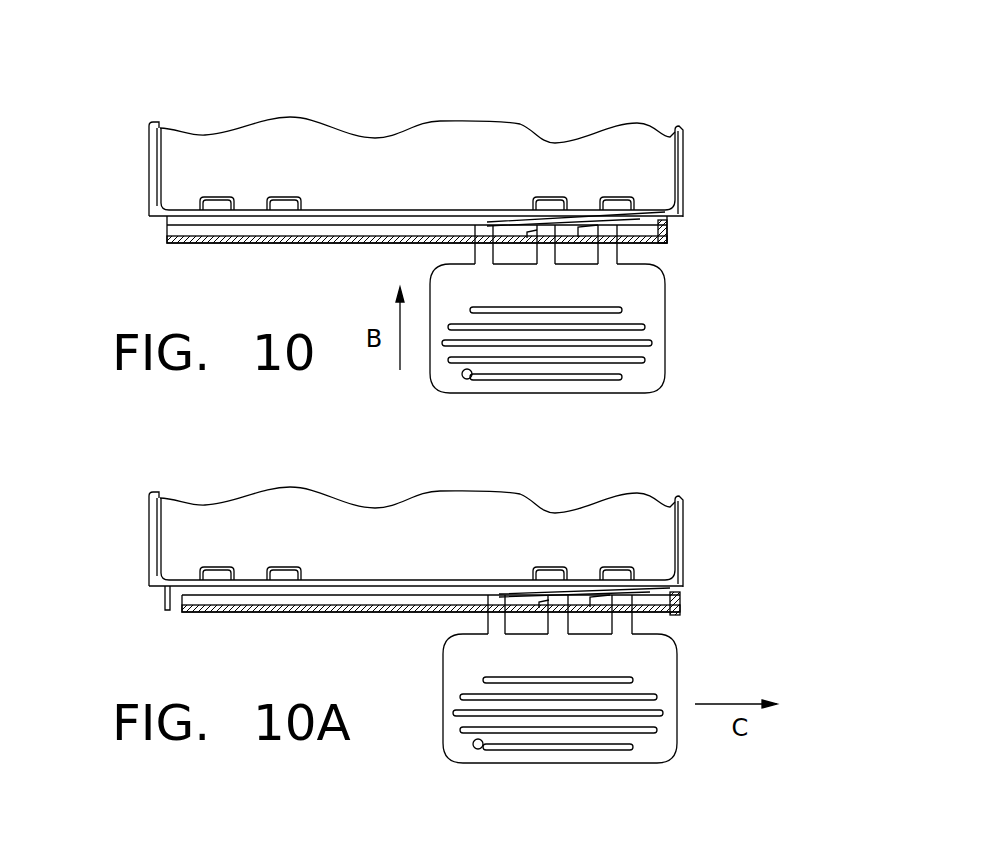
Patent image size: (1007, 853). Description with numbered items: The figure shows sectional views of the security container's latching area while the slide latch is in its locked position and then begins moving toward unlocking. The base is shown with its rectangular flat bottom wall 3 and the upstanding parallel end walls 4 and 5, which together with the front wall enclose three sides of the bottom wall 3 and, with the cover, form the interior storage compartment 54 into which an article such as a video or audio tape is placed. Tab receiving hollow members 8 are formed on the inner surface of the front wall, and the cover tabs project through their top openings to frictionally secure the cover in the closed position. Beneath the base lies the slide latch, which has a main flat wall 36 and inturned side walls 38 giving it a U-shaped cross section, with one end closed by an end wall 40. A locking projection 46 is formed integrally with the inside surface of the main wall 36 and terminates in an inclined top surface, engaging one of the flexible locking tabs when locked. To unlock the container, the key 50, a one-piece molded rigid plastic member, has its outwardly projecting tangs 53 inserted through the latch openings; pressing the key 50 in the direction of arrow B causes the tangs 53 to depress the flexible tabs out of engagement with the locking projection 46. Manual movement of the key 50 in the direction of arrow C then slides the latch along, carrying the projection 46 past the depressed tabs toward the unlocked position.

In FIG. 10, the bottom wall 3 is at (265, 145).
In FIG. 10, the end wall 5 is at (160, 163).
In FIG. 10, the tab receiving hollow member 8 is at (219, 197).
In FIG. 10, the locking projection 46 is at (473, 232).
In FIG. 10, the tang 53 is at (478, 234).
In FIG. 10, the interior storage compartment 54 is at (630, 148).
In FIG. 10, the key 50 is at (665, 318).
In FIG. 10A, the end wall 4 is at (673, 535).
In FIG. 10A, the side wall 38 is at (233, 598).
In FIG. 10A, the main flat wall 36 is at (363, 612).
In FIG. 10A, the end wall 40 is at (680, 597).